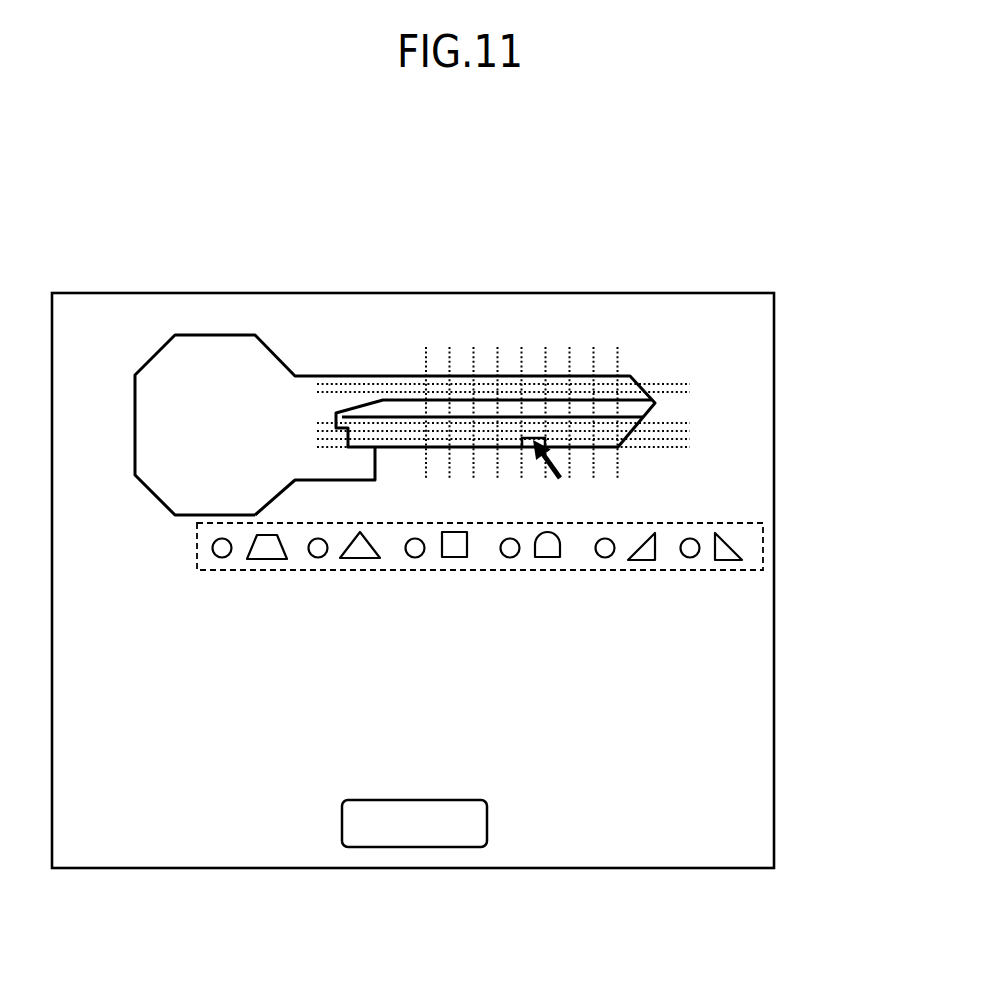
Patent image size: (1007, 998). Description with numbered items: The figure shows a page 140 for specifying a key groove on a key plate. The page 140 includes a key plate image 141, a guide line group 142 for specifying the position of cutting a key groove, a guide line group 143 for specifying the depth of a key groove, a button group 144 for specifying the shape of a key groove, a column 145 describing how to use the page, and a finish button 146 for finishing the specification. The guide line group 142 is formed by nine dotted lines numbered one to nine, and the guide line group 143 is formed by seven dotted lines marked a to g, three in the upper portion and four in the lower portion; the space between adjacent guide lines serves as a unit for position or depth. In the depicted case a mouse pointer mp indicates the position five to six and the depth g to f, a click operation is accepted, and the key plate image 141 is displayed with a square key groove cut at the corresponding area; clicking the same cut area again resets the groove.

The page for specifying a key groove 140 is at (685, 293).
The key plate image 141 is at (222, 333).
The guide line group for specifying the position of cutting a key groove 142 is at (630, 305).
The guide line group for specifying the depth of a key groove 143 is at (750, 352).
The button group for specifying the shape of a key groove 144 is at (765, 542).
The column of describing how to use this page 145 is at (725, 653).
The finish button 146 is at (487, 813).
The mouse pointer mp is at (535, 462).